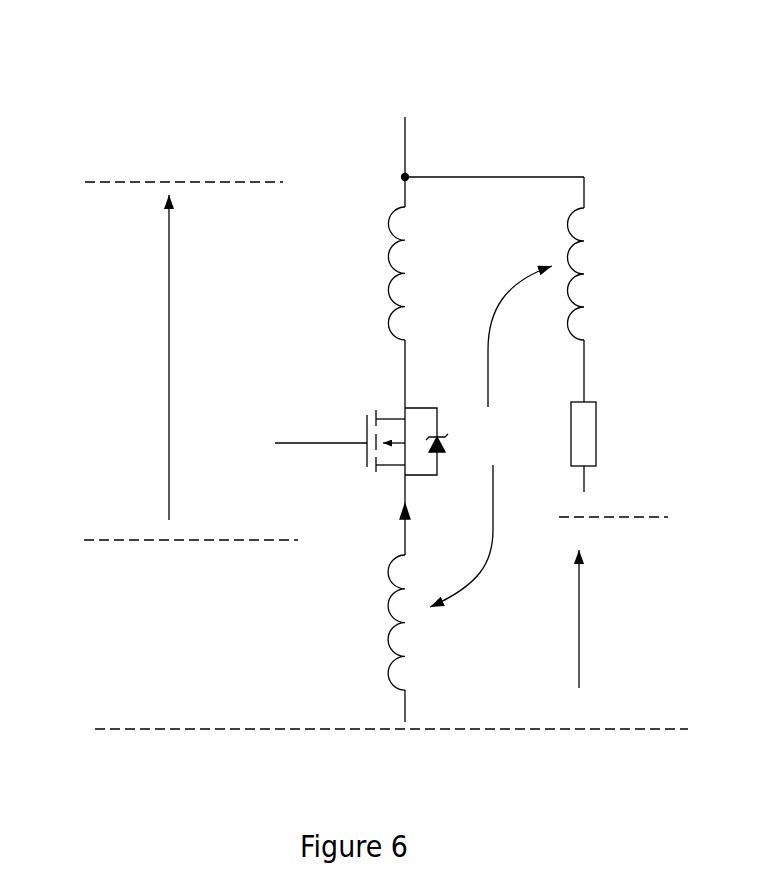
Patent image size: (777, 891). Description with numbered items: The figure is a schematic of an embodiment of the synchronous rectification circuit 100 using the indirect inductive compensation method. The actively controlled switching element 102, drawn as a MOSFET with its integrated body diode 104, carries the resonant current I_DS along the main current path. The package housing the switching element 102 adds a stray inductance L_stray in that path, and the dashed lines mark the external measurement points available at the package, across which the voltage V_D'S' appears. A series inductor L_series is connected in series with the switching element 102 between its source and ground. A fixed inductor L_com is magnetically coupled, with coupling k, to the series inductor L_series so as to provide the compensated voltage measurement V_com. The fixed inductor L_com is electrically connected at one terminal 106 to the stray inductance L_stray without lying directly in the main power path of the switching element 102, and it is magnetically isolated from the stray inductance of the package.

The synchronous rectification circuit 100 is at (138, 68).
The actively controlled switching element 102 is at (366, 398).
The integrated body diode 104 is at (439, 400).
The terminal 106 is at (416, 165).